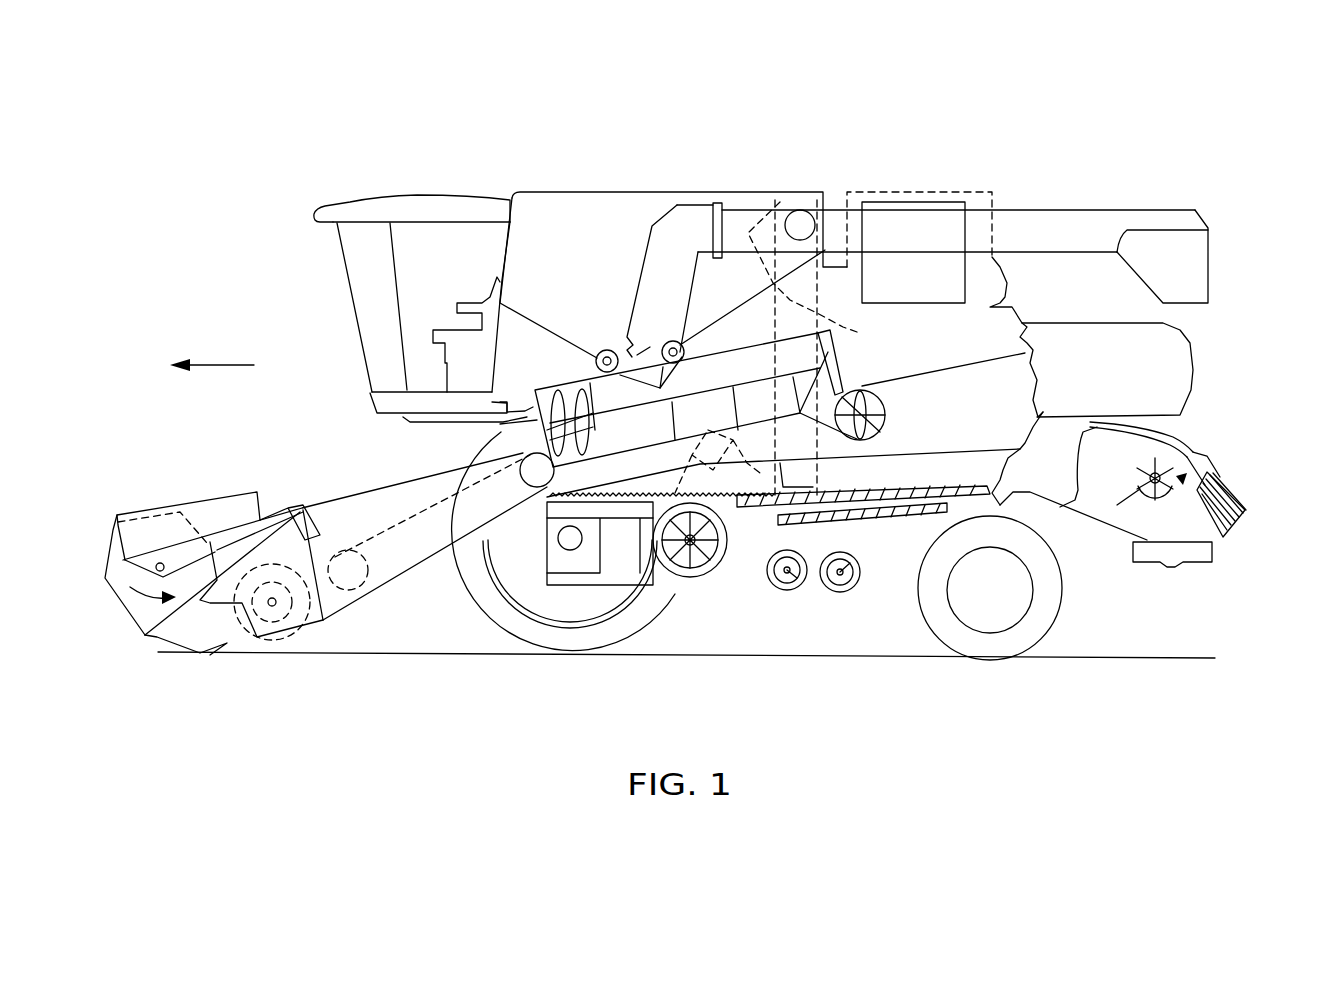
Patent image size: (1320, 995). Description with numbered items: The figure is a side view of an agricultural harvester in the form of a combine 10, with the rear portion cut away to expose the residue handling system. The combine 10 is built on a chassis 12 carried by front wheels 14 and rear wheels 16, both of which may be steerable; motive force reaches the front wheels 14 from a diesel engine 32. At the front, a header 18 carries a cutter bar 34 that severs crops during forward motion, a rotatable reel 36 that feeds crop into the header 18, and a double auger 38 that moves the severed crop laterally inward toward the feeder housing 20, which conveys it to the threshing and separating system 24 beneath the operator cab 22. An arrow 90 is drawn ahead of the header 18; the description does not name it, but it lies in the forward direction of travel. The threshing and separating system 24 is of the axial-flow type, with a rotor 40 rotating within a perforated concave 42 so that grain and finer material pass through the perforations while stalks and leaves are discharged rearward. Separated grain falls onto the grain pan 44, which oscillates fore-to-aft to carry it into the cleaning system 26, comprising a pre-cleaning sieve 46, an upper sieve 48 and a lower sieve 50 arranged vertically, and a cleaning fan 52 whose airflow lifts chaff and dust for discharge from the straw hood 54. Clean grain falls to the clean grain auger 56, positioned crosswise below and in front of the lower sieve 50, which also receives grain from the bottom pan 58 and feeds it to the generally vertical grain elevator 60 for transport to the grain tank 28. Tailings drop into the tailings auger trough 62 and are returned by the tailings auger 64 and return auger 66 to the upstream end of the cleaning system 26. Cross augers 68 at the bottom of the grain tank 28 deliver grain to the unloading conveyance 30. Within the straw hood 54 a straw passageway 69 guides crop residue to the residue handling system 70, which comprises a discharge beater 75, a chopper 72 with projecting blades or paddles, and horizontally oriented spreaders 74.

The combine 10 is at (408, 178).
The chassis 12 is at (933, 523).
The front wheels 14 is at (490, 615).
The rear wheels 16 is at (1053, 597).
The header 18 is at (185, 488).
The feeder housing 20 is at (380, 500).
The operator cab 22 is at (353, 290).
The threshing and separating system 24 is at (480, 437).
The cleaning system 26 is at (754, 584).
The grain tank 28 is at (568, 192).
The unloading conveyance 30 is at (1082, 227).
The diesel engine 32 is at (902, 193).
The cutter bar 34 is at (202, 653).
The rotatable reel 36 is at (105, 572).
The double auger 38 is at (282, 650).
The rotor 40 is at (550, 390).
The perforated concave 42 is at (755, 363).
The grain pan 44 is at (550, 502).
The pre-cleaning sieve 46 is at (832, 486).
The upper sieve 48 is at (957, 487).
The lower sieve 50 is at (858, 532).
The cleaning fan 52 is at (689, 578).
The straw hood 54 is at (1170, 362).
The clean grain auger 56 is at (790, 591).
The bottom pan 58 is at (935, 523).
The grain elevator 60 is at (815, 350).
The tailings auger trough 62 is at (910, 523).
The tailings auger 64 is at (842, 593).
The return auger 66 is at (793, 472).
The cross augers 68 is at (605, 348).
The straw passageway 69 is at (1087, 450).
The residue handling system 70 is at (1238, 430).
The chopper 72 is at (1128, 442).
The spreaders 74 is at (1228, 573).
The discharge beater 75 is at (883, 408).
The forward direction 90 is at (221, 363).